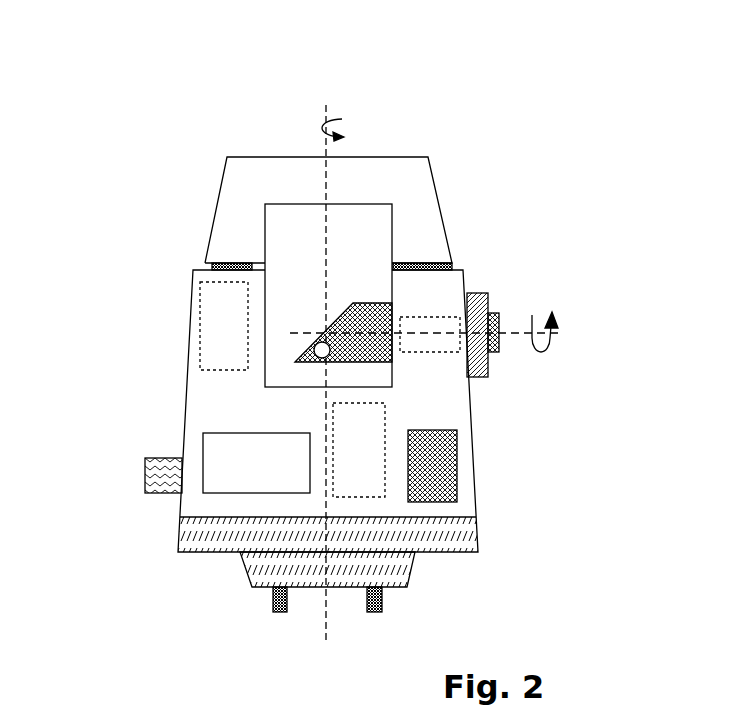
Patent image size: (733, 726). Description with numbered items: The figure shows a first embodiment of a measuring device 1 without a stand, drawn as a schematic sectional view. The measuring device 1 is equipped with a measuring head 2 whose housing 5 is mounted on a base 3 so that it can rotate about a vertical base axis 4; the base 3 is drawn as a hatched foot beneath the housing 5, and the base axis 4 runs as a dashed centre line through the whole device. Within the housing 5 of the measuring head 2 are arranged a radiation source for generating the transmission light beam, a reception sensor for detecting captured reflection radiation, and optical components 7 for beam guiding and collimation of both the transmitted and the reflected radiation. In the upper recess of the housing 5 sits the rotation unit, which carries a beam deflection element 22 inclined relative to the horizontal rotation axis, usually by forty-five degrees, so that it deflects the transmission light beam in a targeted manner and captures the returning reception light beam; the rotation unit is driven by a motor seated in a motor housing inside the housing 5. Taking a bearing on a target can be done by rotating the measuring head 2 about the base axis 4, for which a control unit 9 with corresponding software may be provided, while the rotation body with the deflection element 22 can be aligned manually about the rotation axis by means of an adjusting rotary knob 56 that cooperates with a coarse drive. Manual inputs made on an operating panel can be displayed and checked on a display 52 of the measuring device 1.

The measuring device 1 is at (193, 186).
The measuring head 2 is at (510, 498).
The base 3 is at (245, 572).
The base axis 4 is at (323, 605).
The housing 5 is at (424, 190).
The display 52 is at (242, 452).
The control unit 9 is at (383, 415).
The optical components 7 is at (328, 335).
The beam deflection element 22 is at (311, 325).
The adjusting rotary knob 56 is at (497, 317).